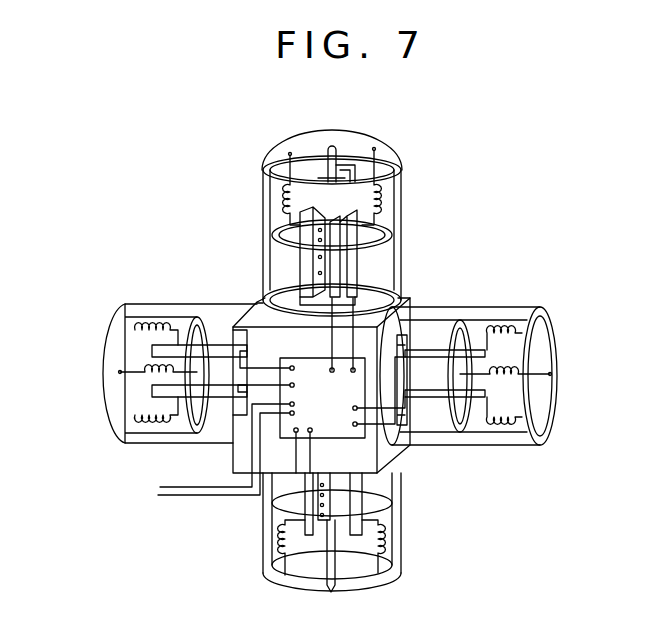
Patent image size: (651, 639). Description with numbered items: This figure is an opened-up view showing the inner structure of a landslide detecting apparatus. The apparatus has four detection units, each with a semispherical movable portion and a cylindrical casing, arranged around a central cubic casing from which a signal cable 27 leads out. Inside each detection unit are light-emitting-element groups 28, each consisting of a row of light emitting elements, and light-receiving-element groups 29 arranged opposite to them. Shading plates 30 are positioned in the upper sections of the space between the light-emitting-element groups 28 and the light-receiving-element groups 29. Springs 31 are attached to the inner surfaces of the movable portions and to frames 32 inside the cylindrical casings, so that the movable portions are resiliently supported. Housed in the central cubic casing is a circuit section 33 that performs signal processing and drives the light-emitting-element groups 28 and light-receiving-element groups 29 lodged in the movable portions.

The signal cable 27 is at (187, 500).
The light-emitting-element groups 28 is at (275, 258).
The light-receiving-element groups 29 is at (380, 262).
The shading plates 30 is at (327, 176).
The springs 31 is at (290, 198).
The frames 32 is at (383, 242).
The circuit section 33 is at (343, 430).